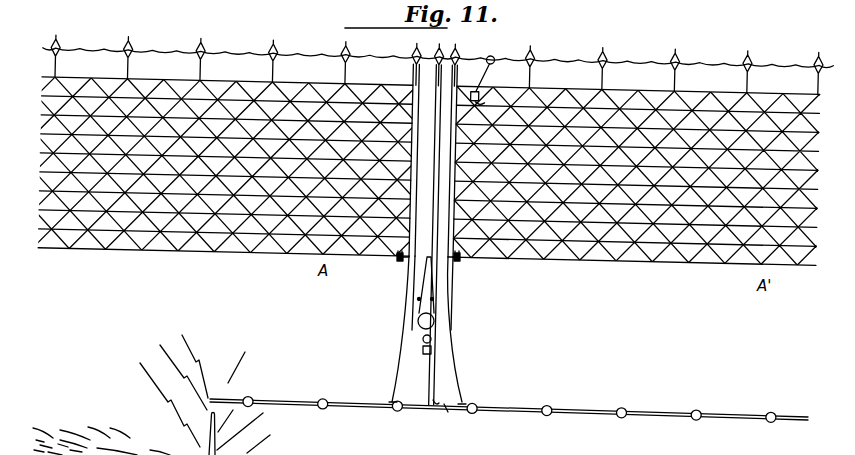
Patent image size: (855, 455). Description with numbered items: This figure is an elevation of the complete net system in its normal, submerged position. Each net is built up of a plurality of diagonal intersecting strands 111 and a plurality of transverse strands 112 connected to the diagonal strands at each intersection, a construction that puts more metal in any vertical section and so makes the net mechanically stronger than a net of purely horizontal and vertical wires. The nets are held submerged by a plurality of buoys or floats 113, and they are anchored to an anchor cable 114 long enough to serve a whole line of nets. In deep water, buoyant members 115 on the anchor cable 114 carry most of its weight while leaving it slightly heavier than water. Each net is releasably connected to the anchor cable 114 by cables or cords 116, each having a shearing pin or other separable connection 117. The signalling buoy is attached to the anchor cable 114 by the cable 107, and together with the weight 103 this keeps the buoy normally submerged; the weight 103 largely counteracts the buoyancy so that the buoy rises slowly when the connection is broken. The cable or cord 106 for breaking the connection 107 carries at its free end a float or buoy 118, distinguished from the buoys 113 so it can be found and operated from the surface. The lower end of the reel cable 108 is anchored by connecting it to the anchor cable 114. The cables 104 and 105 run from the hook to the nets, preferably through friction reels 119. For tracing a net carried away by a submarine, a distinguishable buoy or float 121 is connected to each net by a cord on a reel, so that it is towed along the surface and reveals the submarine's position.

The weight 103 is at (420, 355).
The cable 104 is at (406, 290).
The cable 105 is at (464, 281).
The cable or cord 106 is at (428, 239).
The cable 107 is at (426, 392).
The connector 108 is at (448, 410).
The diagonal intersecting strands 111 is at (190, 250).
The transverse strands 112 is at (221, 79).
The buoys or floats 113 is at (130, 47).
The anchor cable 114 is at (330, 400).
The buoyant members 115 is at (399, 411).
The cables or cords 116 is at (391, 392).
The shearing pin or separable connection 117 is at (405, 346).
The float or buoy 118 is at (440, 58).
The friction reels 119 is at (396, 259).
The buoy or float 121 is at (491, 58).